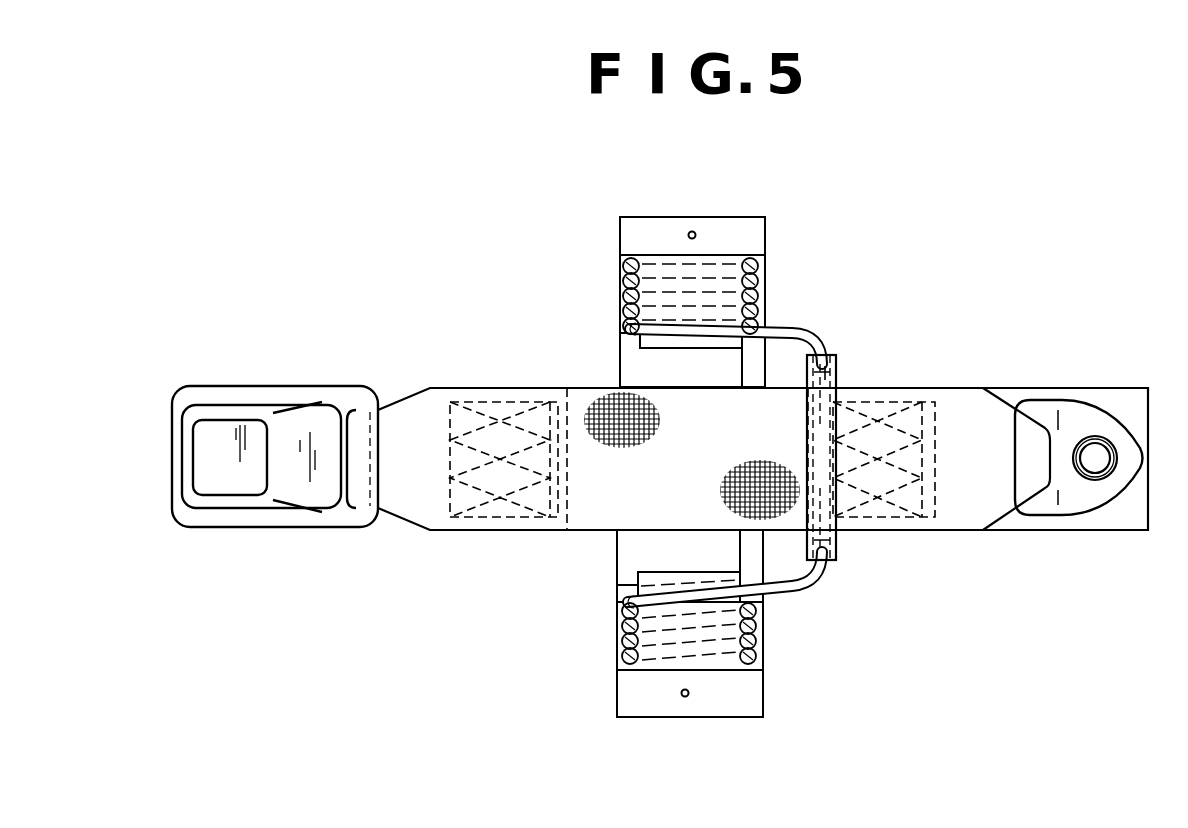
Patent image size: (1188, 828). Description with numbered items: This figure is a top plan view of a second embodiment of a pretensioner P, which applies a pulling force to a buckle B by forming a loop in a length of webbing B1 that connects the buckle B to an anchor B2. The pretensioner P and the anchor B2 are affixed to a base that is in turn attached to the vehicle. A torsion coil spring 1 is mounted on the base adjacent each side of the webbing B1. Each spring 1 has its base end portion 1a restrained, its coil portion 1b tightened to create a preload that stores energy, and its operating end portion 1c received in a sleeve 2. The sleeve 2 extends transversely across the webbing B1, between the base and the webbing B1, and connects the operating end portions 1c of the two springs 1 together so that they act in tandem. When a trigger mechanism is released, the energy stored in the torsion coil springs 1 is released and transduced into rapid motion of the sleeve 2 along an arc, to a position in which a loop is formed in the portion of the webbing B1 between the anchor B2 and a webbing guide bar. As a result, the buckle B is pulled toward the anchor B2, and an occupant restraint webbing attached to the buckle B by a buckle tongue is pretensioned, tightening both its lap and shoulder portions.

The buckle B is at (300, 403).
The webbing B1 is at (583, 400).
The anchor B2 is at (1084, 438).
The pretensioner P is at (600, 576).
The torsion coil spring 1 is at (783, 588).
The base end portion 1a is at (622, 664).
The coil portion 1b is at (758, 280).
The operating end portion 1c is at (840, 372).
The sleeve 2 is at (838, 548).